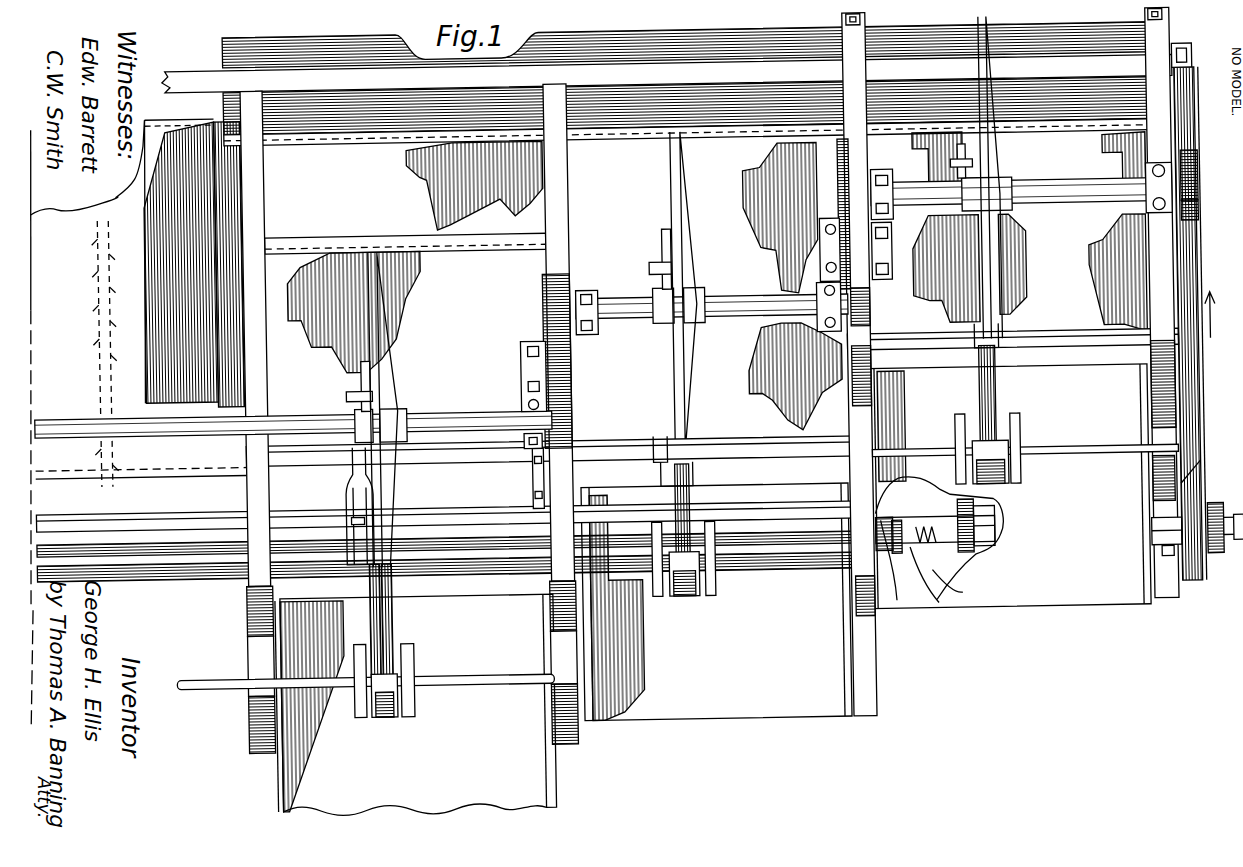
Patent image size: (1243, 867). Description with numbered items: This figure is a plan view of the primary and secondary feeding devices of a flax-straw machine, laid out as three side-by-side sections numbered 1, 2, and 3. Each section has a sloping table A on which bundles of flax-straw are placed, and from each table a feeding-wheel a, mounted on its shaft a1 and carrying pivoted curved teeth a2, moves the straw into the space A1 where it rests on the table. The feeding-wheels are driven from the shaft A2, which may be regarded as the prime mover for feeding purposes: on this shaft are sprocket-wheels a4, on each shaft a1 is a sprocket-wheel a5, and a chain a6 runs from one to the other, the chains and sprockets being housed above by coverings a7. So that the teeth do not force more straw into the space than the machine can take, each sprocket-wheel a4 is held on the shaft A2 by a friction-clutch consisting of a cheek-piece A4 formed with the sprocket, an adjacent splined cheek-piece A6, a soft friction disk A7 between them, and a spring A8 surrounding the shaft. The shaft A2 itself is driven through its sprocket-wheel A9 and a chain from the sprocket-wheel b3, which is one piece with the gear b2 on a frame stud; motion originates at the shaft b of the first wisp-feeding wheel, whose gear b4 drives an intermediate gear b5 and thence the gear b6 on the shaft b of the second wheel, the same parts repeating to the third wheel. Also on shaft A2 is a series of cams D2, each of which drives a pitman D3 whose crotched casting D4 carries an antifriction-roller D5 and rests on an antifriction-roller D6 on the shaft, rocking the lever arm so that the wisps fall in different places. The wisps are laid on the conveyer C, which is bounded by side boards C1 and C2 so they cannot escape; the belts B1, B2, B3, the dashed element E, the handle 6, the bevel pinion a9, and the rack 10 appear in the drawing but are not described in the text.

The sloping table A is at (1188, 400).
The space A1 is at (794, 586).
The shaft A2 is at (151, 549).
The cheek-piece A4 is at (1180, 503).
The cheek-piece A6 is at (960, 598).
The friction disk A7 is at (960, 556).
The spring A8 is at (924, 521).
The sprocket-wheel A9 is at (1190, 588).
The feeding-wheel a is at (1003, 492).
The shaft a1 is at (1073, 454).
The pivoted teeth a2 is at (991, 419).
The sprocket-wheel a4 is at (888, 512).
The sprocket-wheel a5 is at (887, 620).
The chain a6 is at (1168, 556).
The covering a7 is at (885, 422).
The bevel pinion a9 is at (1200, 565).
The belt B1 is at (988, 155).
The belt B2 is at (676, 188).
The belt B3 is at (376, 278).
The shaft b is at (1040, 197).
The gear b2 is at (1208, 180).
The sprocket-wheel b3 is at (1199, 222).
The gear b4 is at (843, 193).
The gear b5 is at (824, 250).
The gear b6 is at (875, 312).
The conveyer C is at (406, 275).
The side board C1 is at (467, 444).
The side board C2 is at (352, 128).
The cam D2 is at (348, 523).
The pitman D3 is at (355, 437).
The casting D4 is at (346, 484).
The antifriction-roller D5 is at (360, 494).
The antifriction-roller D6 is at (353, 533).
The cord E is at (93, 411).
The primary feeding device 1 is at (1032, 384).
The primary feeding device 2 is at (680, 735).
The primary feeding device 3 is at (419, 462).
The handle 6 is at (1226, 562).
The rack 10 is at (1207, 311).